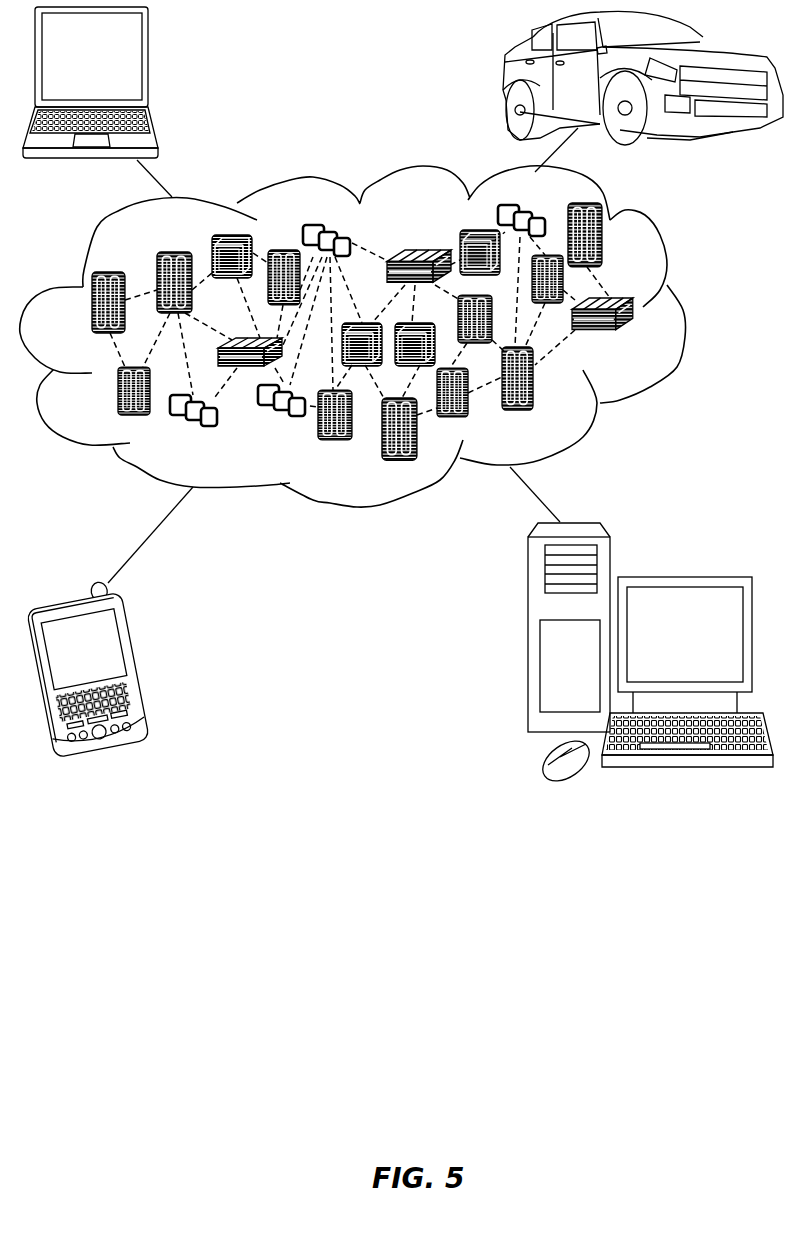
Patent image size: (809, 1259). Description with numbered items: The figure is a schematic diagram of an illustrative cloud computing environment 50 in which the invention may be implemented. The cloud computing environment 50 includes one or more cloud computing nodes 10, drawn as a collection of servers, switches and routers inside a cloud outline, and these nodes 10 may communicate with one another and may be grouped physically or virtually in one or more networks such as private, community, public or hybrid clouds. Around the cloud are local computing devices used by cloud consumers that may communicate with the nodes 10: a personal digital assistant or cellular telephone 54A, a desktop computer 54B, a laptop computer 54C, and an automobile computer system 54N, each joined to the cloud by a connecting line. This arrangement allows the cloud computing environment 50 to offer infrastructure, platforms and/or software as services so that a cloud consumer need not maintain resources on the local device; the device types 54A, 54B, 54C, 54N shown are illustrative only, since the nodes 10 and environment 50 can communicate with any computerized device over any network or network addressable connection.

The cloud computing node 10 is at (641, 347).
The cloud computing environment 50 is at (683, 310).
The personal digital assistant or cellular telephone 54A is at (140, 660).
The desktop computer 54B is at (683, 573).
The laptop computer 54C is at (148, 63).
The automobile computer system 54N is at (503, 80).